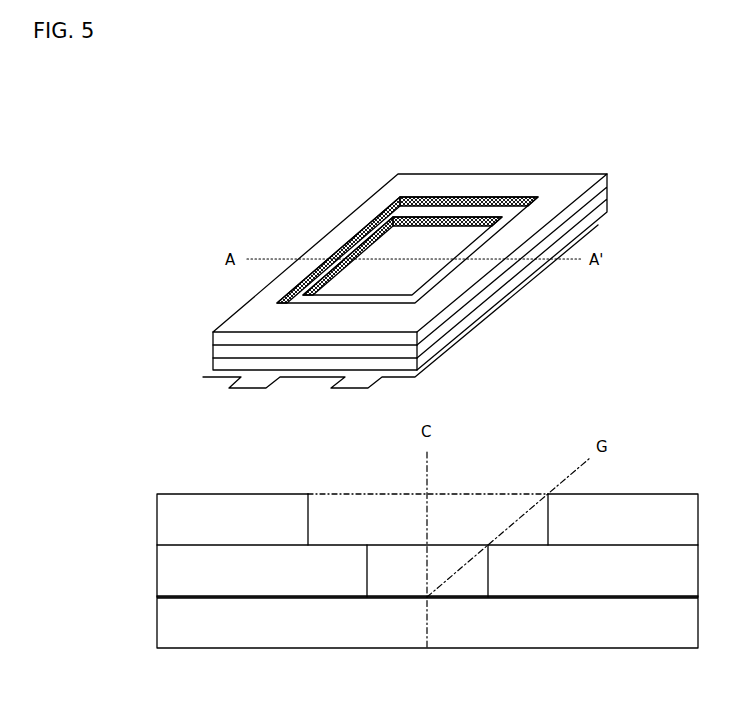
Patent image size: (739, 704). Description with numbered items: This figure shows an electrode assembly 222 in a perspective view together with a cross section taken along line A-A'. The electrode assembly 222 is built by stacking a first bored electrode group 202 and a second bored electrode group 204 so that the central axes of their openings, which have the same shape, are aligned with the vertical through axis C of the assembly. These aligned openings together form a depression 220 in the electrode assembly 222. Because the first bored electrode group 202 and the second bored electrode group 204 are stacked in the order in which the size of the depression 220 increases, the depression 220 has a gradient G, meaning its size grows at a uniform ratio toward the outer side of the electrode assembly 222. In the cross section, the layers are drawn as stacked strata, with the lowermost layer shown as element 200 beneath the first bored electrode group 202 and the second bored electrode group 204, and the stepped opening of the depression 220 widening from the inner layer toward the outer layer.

The first substrate layer 200 is at (157, 637).
The first bored electrode group 202 is at (157, 576).
The second bored electrode group 204 is at (157, 518).
The depression 220 is at (390, 258).
The electrode assembly 222 is at (607, 174).